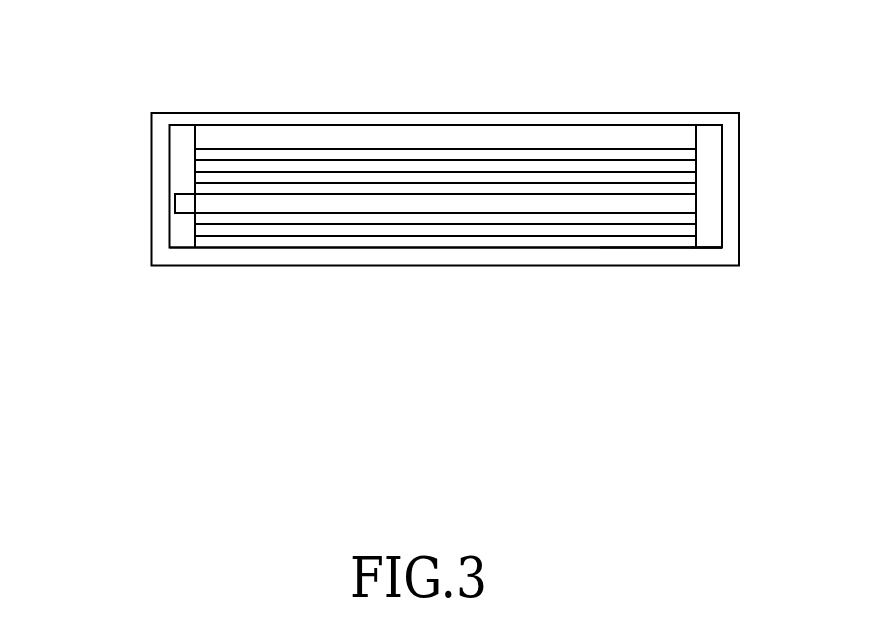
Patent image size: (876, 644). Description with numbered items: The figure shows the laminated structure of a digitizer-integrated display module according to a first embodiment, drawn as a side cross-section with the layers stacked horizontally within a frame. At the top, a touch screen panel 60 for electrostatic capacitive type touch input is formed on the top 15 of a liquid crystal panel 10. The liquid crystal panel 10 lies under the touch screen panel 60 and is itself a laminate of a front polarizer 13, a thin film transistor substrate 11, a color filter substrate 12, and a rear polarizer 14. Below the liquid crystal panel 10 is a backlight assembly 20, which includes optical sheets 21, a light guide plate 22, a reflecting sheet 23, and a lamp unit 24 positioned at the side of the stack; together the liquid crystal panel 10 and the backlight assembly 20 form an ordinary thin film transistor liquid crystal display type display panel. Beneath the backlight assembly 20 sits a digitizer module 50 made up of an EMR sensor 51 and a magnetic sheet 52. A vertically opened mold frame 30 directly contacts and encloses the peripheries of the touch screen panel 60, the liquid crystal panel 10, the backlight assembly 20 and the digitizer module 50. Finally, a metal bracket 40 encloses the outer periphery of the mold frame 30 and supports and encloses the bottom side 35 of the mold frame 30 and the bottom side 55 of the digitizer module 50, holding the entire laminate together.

The liquid crystal panel 10 is at (528, 147).
The thin film transistor substrate 11 is at (690, 178).
The color filter substrate 12 is at (685, 155).
The front polarizer 13 is at (673, 135).
The rear polarizer 14 is at (503, 193).
The top of the liquid crystal panel 15 is at (614, 124).
The backlight assembly 20 is at (353, 200).
The optical sheets 21 is at (201, 187).
The light guide plate 22 is at (200, 201).
The reflecting sheet 23 is at (203, 217).
The lamp unit 24 is at (182, 205).
The mold frame 30 is at (708, 215).
The bottom side of the mold frame 35 is at (703, 248).
The metal bracket 40 is at (521, 258).
The digitizer module 50 is at (731, 290).
The EMR sensor 51 is at (690, 230).
The magnetic sheet 52 is at (697, 246).
The bottom side of the digitizer module 55 is at (362, 250).
The touch screen panel 60 is at (529, 120).